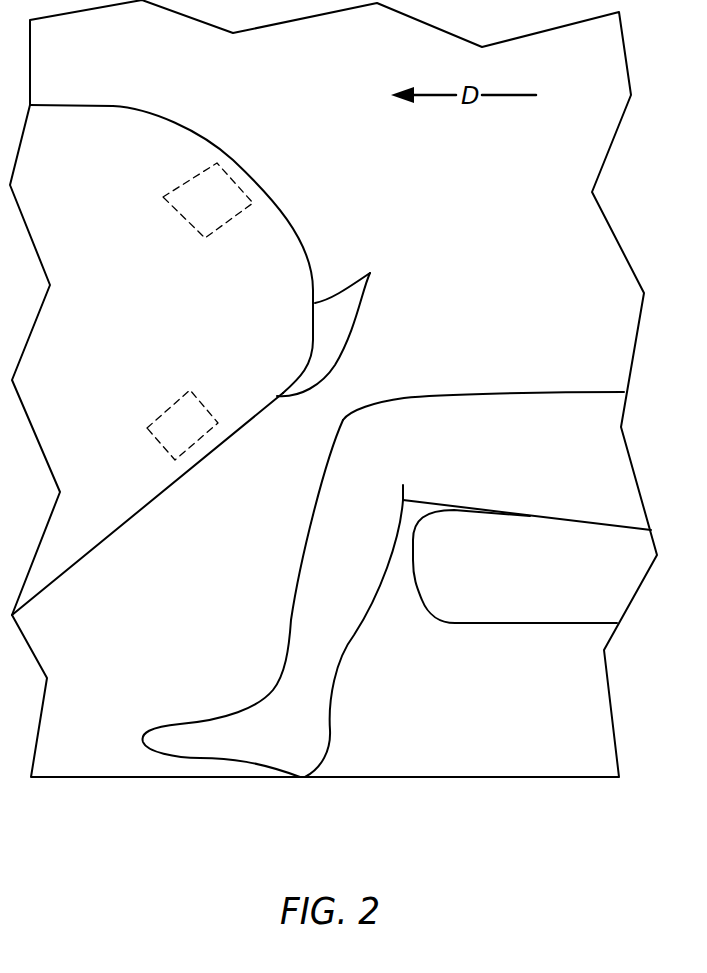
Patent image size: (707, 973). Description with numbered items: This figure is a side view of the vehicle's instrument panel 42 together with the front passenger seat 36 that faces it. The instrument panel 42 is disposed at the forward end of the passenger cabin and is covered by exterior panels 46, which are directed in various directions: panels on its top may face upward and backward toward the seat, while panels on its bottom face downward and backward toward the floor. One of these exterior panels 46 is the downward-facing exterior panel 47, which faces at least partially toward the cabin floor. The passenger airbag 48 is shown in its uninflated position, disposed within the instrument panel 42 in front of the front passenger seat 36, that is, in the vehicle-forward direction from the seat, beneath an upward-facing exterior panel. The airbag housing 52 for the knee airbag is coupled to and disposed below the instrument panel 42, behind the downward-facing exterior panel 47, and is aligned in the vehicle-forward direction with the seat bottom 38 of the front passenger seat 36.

The front passenger seat 36 is at (507, 623).
The seat bottom 38 is at (422, 587).
The instrument panel 42 is at (163, 112).
The exterior panels 46 is at (370, 273).
The downward-facing exterior panel 47 is at (240, 428).
The passenger airbag 48 is at (230, 177).
The airbag housing 52 is at (202, 440).